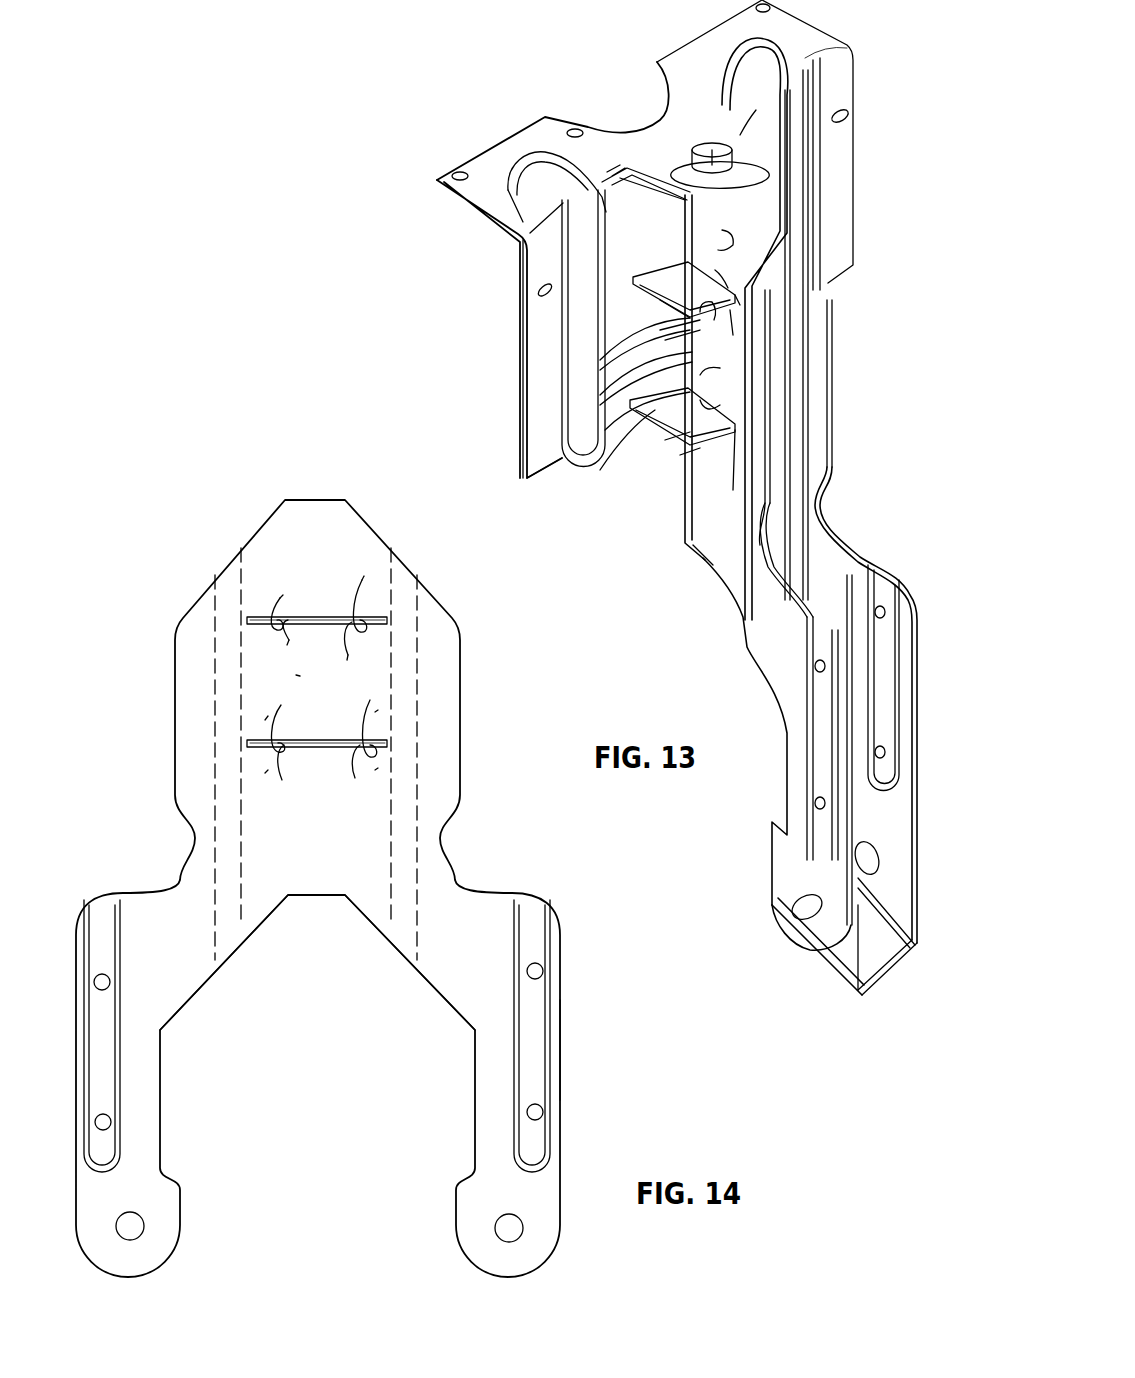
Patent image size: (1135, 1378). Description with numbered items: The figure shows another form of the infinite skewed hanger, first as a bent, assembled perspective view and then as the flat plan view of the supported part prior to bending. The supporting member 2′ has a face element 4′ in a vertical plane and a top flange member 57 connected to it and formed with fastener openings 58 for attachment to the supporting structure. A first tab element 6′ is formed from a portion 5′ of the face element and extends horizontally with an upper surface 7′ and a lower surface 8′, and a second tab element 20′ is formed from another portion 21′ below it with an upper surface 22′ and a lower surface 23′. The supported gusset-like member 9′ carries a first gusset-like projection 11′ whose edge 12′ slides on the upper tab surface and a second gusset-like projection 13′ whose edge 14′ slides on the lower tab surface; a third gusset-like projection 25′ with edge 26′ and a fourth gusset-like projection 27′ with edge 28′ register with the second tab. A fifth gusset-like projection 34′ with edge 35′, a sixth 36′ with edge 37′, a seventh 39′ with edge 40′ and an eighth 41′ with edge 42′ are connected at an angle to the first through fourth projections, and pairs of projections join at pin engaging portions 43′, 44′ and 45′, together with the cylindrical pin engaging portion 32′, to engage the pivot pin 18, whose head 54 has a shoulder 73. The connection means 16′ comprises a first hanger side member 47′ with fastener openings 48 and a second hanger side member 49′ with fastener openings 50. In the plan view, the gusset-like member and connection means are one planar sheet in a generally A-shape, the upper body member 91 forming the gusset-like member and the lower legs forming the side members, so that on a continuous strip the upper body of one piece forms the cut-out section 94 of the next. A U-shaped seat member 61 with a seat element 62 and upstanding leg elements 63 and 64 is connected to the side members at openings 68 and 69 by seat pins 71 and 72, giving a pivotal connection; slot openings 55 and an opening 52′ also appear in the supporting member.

In FIG. 13, the supporting member 2′ is at (520, 470).
In FIG. 13, the face element 4′ is at (545, 385).
In FIG. 13, the portion of the face element 5′ is at (682, 340).
In FIG. 13, the first tab element 6′ is at (672, 330).
In FIG. 13, the upper surface 7′ is at (670, 272).
In FIG. 13, the lower surface 8′ is at (662, 302).
In FIG. 14, the supported gusset-like member 9′ is at (358, 498).
In FIG. 13, the supported gusset-like member 9′ is at (770, 196).
In FIG. 14, the first gusset-like projection 11′ is at (262, 578).
In FIG. 13, the first gusset-like projection 11′ is at (711, 225).
In FIG. 14, the edge 12′ is at (279, 600).
In FIG. 13, the edge 12′ is at (732, 278).
In FIG. 14, the second gusset-like projection 13′ is at (262, 655).
In FIG. 13, the second gusset-like projection 13′ is at (714, 332).
In FIG. 14, the edge 14′ is at (279, 646).
In FIG. 13, the edge 14′ is at (739, 336).
In FIG. 14, the connection means 16′ is at (566, 1050).
In FIG. 13, the connection means 16′ is at (750, 660).
In FIG. 13, the pivot means 18 is at (712, 145).
In FIG. 13, the second tab element 20′ is at (660, 420).
In FIG. 13, the portion of the face element 21′ is at (660, 85).
In FIG. 13, the upper surface 22′ is at (602, 470).
In FIG. 13, the lower surface 23′ is at (672, 432).
In FIG. 14, the third gusset-like projection 25′ is at (263, 722).
In FIG. 13, the third gusset-like projection 25′ is at (610, 424).
In FIG. 14, the edge 26′ is at (284, 715).
In FIG. 13, the edge 26′ is at (721, 388).
In FIG. 14, the fourth gusset-like projection 27′ is at (263, 775).
In FIG. 13, the fourth gusset-like projection 27′ is at (703, 470).
In FIG. 14, the edge 28′ is at (272, 782).
In FIG. 13, the edge 28′ is at (726, 471).
In FIG. 14, the cylindrical pin engaging portion 32′ is at (330, 614).
In FIG. 13, the cylindrical pin engaging portion 32′ is at (685, 232).
In FIG. 14, the fifth gusset-like projection 34′ is at (372, 590).
In FIG. 13, the fifth gusset-like projection 34′ is at (765, 235).
In FIG. 14, the edge 35′ is at (357, 598).
In FIG. 14, the sixth gusset-like projection 36′ is at (372, 650).
In FIG. 14, the edge 37′ is at (348, 647).
In FIG. 14, the seventh gusset-like projection 39′ is at (375, 712).
In FIG. 14, the edge 40′ is at (366, 717).
In FIG. 14, the eighth gusset-like projection 41′ is at (375, 770).
In FIG. 14, the edge 42′ is at (352, 779).
In FIG. 14, the pin engaging portion 43′ is at (330, 649).
In FIG. 13, the pin engaging portion 43′ is at (610, 355).
In FIG. 14, the pin engaging portion 44′ is at (330, 736).
In FIG. 13, the pin engaging portion 44′ is at (610, 390).
In FIG. 14, the pin engaging portion 45′ is at (330, 774).
In FIG. 13, the pin engaging portion 45′ is at (696, 450).
In FIG. 14, the first hanger side member 47′ is at (78, 1200).
In FIG. 13, the first hanger side member 47′ is at (790, 770).
In FIG. 14, the fastener openings 48 is at (100, 975).
In FIG. 13, the fastener openings 48 is at (815, 668).
In FIG. 14, the second hanger side member 49′ is at (560, 1175).
In FIG. 13, the second hanger side member 49′ is at (917, 775).
In FIG. 14, the fastener openings 50 is at (537, 968).
In FIG. 13, the fastener openings 50 is at (884, 608).
In FIG. 13, the opening 52′ is at (742, 130).
In FIG. 13, the head 54 is at (697, 148).
In FIG. 13, the slot hole 55 is at (846, 113).
In FIG. 13, the top flange member 57 is at (520, 128).
In FIG. 13, the fastener openings 58 is at (576, 130).
In FIG. 13, the U-shaped seat member 61 is at (860, 1000).
In FIG. 13, the seat element 62 is at (888, 962).
In FIG. 13, the upstanding leg element 63 is at (860, 965).
In FIG. 13, the upstanding leg element 64 is at (917, 905).
In FIG. 14, the opening 68 is at (135, 1220).
In FIG. 14, the opening 69 is at (505, 1228).
In FIG. 13, the seat pin 71 is at (808, 912).
In FIG. 13, the seat pin 72 is at (870, 862).
In FIG. 13, the shoulder 73 is at (765, 168).
In FIG. 14, the upper body member 91 is at (298, 676).
In FIG. 14, the cut-out section 94 is at (470, 1030).